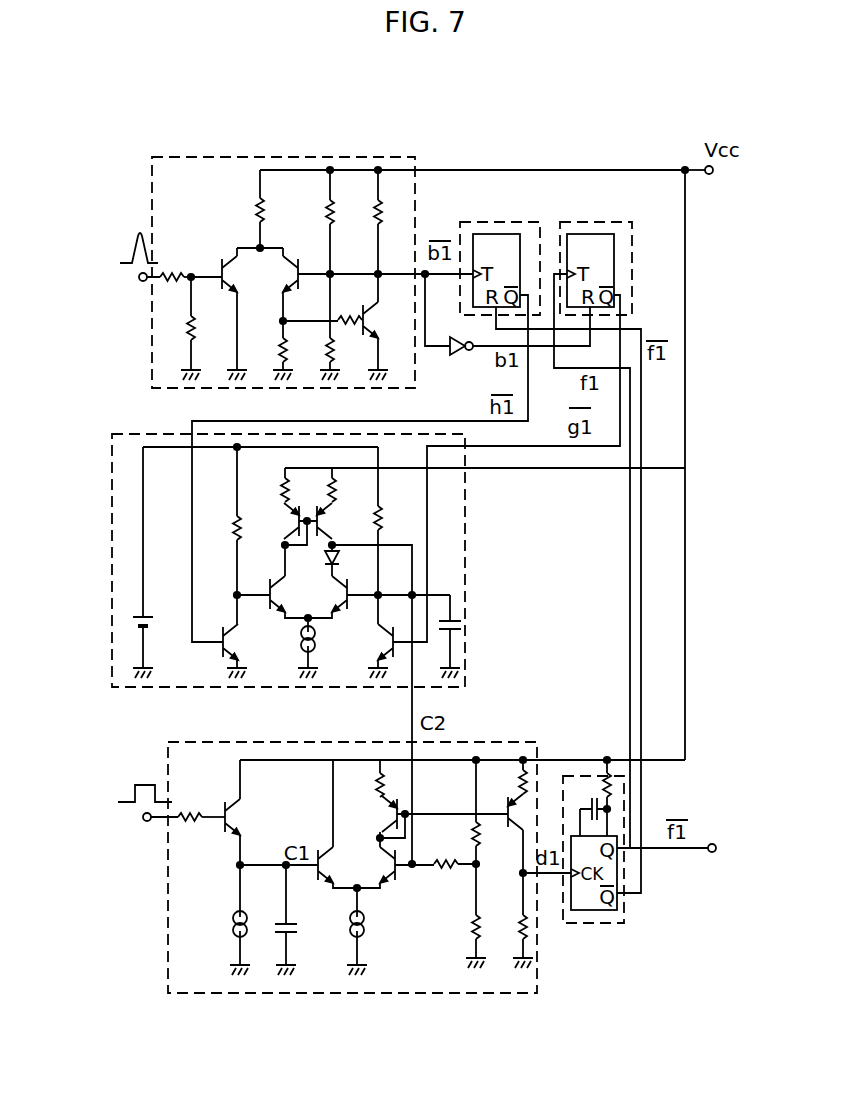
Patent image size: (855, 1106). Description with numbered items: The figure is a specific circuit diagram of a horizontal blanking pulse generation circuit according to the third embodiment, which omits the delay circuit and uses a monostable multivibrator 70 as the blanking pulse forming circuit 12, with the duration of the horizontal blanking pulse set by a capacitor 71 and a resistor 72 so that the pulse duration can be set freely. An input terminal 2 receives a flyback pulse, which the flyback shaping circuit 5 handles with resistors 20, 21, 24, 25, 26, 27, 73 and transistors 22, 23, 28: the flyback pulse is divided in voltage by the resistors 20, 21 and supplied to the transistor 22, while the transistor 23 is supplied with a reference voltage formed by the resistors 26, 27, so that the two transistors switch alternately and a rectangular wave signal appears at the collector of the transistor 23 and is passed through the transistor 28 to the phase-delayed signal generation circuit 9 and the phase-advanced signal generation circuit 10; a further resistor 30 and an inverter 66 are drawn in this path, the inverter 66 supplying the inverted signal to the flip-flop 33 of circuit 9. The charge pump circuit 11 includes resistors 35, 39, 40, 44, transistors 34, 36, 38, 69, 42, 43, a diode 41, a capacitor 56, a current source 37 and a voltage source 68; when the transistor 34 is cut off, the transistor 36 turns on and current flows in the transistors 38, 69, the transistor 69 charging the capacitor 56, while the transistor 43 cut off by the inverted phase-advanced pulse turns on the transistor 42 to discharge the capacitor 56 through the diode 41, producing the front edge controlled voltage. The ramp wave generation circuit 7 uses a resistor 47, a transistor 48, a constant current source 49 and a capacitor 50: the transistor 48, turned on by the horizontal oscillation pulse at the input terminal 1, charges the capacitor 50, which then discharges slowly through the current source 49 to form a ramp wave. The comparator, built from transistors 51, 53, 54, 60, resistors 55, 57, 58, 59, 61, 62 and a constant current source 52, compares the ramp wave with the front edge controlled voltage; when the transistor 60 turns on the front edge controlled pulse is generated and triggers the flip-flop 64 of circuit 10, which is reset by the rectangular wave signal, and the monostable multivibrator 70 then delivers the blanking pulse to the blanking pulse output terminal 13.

The input terminal 1 is at (147, 823).
The input terminal 2 is at (141, 283).
The flyback shaping circuit 5 is at (190, 157).
The ramp wave generation circuit 7 is at (168, 750).
The phase-delayed signal generation circuit 9 is at (530, 222).
The phase-advanced signal generation circuit 10 is at (630, 237).
The charge pump circuit 11 is at (112, 688).
The blanking pulse forming circuit 12 is at (620, 923).
The blanking pulse output terminal 13 is at (712, 853).
The resistor 20 is at (176, 283).
The resistor 21 is at (186, 330).
The transistor 22 is at (236, 284).
The transistor 23 is at (298, 258).
The resistor 24 is at (256, 206).
The resistor 25 is at (283, 362).
The resistor 26 is at (332, 224).
The resistor 27 is at (332, 362).
The transistor 28 is at (373, 319).
The resistor 30 is at (382, 209).
The flip-flop 33 is at (487, 234).
The transistor 34 is at (230, 656).
The resistor 35 is at (233, 536).
The transistor 36 is at (272, 609).
The current source 37 is at (302, 647).
The transistor 38 is at (292, 523).
The resistor 39 is at (283, 482).
The resistor 40 is at (337, 491).
The diode 41 is at (318, 575).
The transistor 42 is at (341, 608).
The transistor 43 is at (382, 656).
The resistor 44 is at (382, 516).
The resistor 47 is at (188, 826).
The transistor 48 is at (245, 809).
The constant current source 49 is at (232, 929).
The capacitor 50 is at (298, 931).
The transistor 51 is at (330, 881).
The constant current source 52 is at (365, 925).
The transistor 53 is at (390, 866).
The transistor 54 is at (393, 813).
The resistor 55 is at (376, 791).
The capacitor 56 is at (461, 621).
The resistor 57 is at (442, 871).
The resistor 58 is at (470, 926).
The resistor 59 is at (470, 836).
The transistor 60 is at (529, 865).
The resistor 61 is at (518, 783).
The resistor 62 is at (520, 929).
The flip-flop 64 is at (585, 234).
The inverter 66 is at (466, 356).
The voltage source 68 is at (158, 617).
The transistor 69 is at (326, 523).
The monostable multivibrator 70 is at (593, 910).
The capacitor 71 is at (588, 806).
The resistor 72 is at (605, 778).
The resistor 73 is at (354, 298).